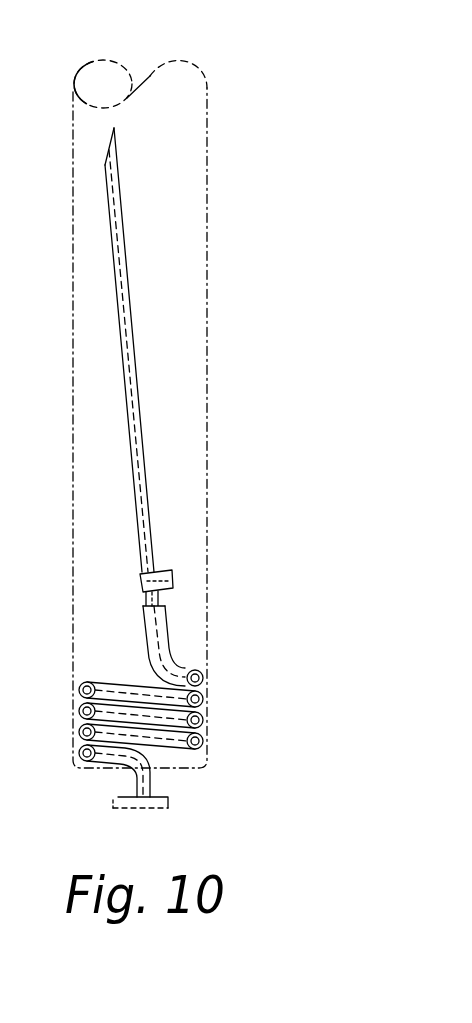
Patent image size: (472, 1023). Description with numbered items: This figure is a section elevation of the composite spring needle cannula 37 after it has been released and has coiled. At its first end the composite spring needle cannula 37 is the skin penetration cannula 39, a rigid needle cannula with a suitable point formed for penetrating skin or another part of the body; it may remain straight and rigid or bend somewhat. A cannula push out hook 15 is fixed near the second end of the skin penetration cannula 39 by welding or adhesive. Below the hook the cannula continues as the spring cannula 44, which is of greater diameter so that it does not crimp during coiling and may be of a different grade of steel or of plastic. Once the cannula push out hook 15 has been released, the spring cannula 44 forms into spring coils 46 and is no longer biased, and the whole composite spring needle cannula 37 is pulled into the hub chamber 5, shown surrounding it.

The hub chamber 5 is at (207, 203).
The composite spring needle cannula 37 is at (160, 435).
The skin penetration cannula 39 is at (150, 510).
The cannula push out hook 15 is at (170, 571).
The spring cannula 44 is at (205, 697).
The spring coils 46 is at (170, 755).